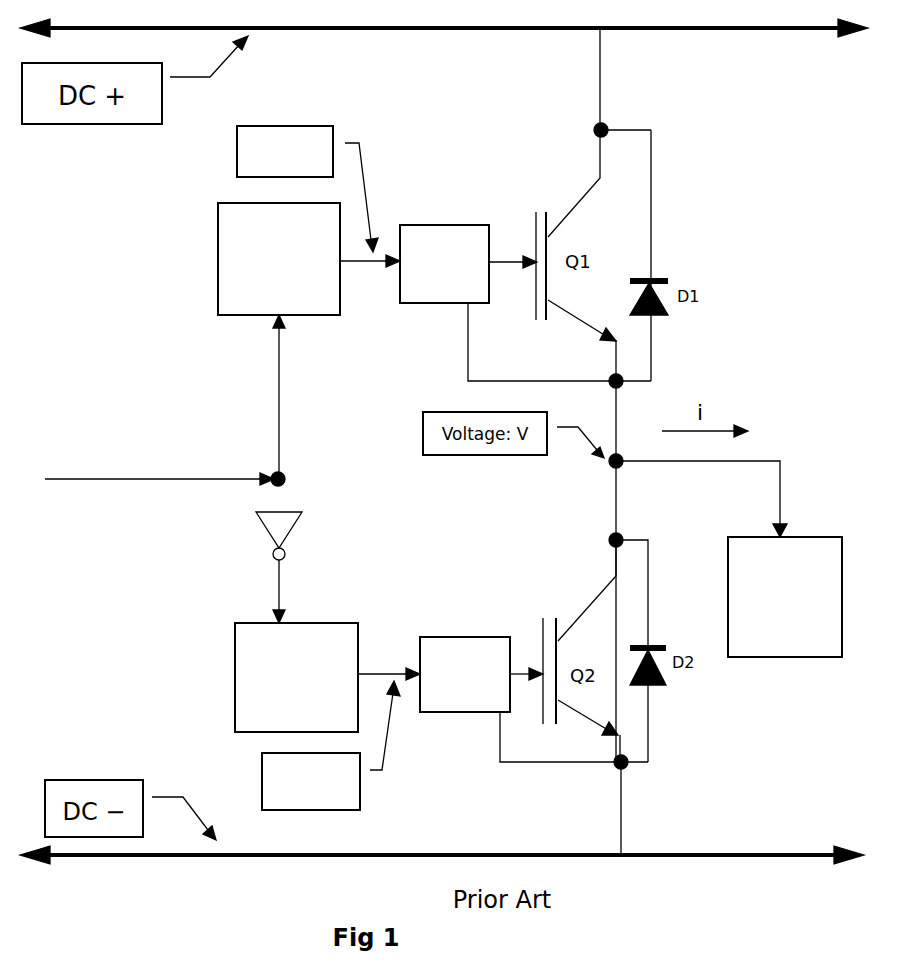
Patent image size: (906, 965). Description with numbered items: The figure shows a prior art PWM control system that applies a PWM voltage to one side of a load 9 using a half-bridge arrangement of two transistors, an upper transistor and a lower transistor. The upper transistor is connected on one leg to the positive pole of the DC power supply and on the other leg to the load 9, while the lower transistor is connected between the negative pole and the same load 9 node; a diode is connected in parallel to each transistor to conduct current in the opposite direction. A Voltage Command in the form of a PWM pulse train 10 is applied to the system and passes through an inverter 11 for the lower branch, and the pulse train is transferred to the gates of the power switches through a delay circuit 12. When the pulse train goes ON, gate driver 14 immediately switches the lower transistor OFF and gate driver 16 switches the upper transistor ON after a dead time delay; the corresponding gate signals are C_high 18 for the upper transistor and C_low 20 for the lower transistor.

The load 9 is at (805, 535).
The PWM command input 10 is at (192, 476).
The inverter 11 is at (288, 527).
The delay circuit 12 is at (215, 233).
The gate driver 14 is at (487, 636).
The gate driver 16 is at (448, 224).
The gate signal C_high 18 is at (386, 250).
The gate signal C_low 20 is at (374, 668).